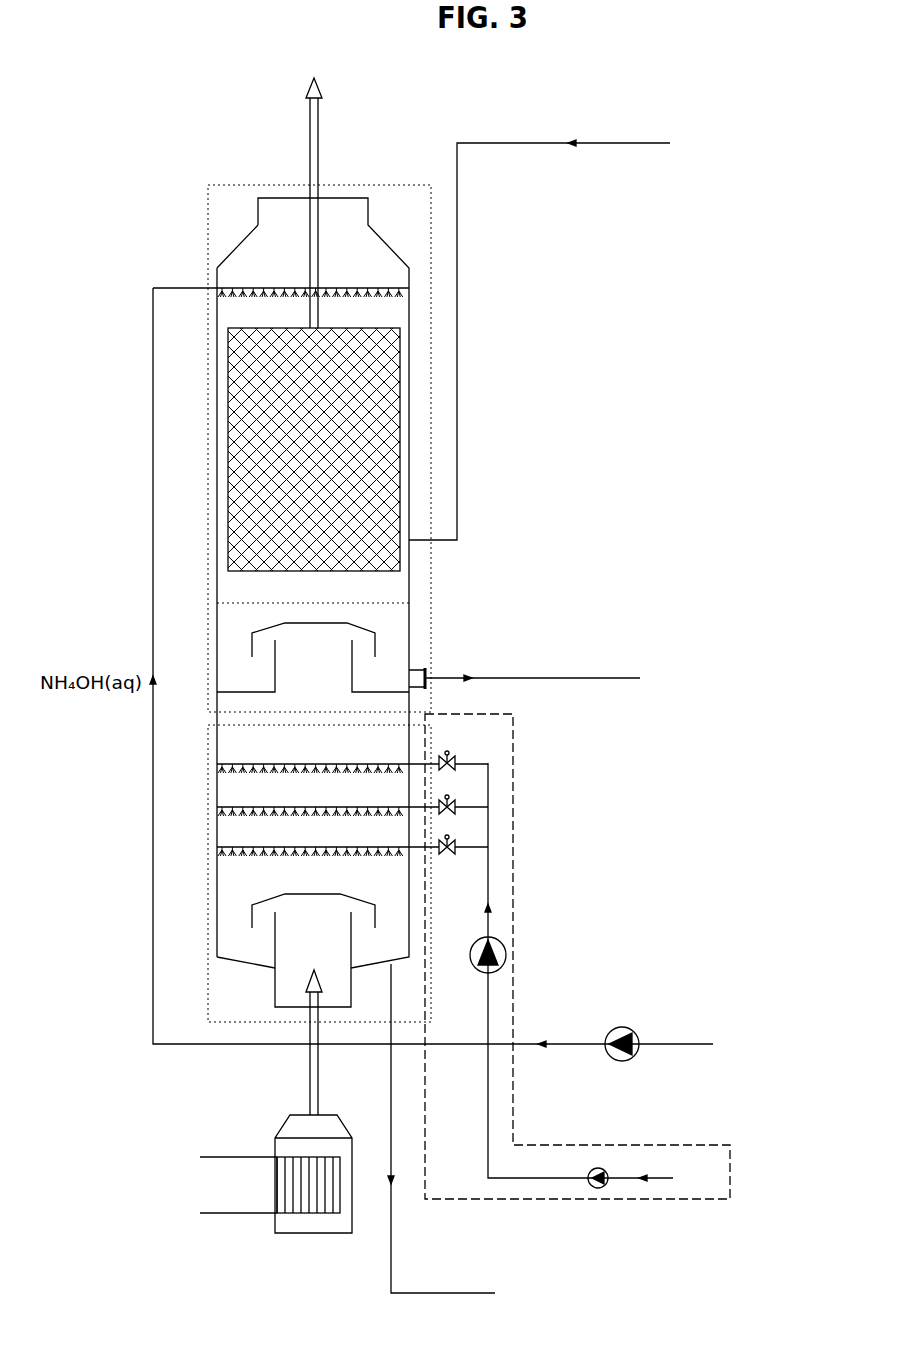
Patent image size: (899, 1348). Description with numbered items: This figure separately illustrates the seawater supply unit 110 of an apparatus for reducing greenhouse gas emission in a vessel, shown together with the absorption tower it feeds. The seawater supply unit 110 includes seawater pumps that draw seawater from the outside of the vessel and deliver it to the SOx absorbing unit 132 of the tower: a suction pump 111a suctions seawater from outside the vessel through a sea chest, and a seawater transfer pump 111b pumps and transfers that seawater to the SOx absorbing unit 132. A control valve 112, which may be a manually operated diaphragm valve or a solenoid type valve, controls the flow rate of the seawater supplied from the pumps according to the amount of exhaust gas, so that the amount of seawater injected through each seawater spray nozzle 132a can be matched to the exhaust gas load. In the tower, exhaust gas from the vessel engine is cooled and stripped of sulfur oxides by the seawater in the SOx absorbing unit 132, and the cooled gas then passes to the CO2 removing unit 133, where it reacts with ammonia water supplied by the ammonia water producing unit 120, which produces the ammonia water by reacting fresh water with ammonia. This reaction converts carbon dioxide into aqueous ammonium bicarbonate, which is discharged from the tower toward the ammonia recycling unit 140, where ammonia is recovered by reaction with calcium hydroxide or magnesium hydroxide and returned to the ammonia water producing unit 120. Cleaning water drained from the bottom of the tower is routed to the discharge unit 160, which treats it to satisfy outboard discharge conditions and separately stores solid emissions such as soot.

The seawater supply unit 110 is at (642, 1137).
The suction pump 111a is at (601, 1168).
The seawater transfer pump 111b is at (518, 955).
The control valve 112 is at (450, 791).
The ammonia water producing unit 120 is at (718, 156).
The SOx absorbing unit 132 is at (328, 873).
The seawater spray nozzle 132a is at (352, 756).
The CO2 removing unit 133 is at (299, 448).
The ammonia recycling unit 140 is at (686, 690).
The discharge unit 160 is at (542, 1306).